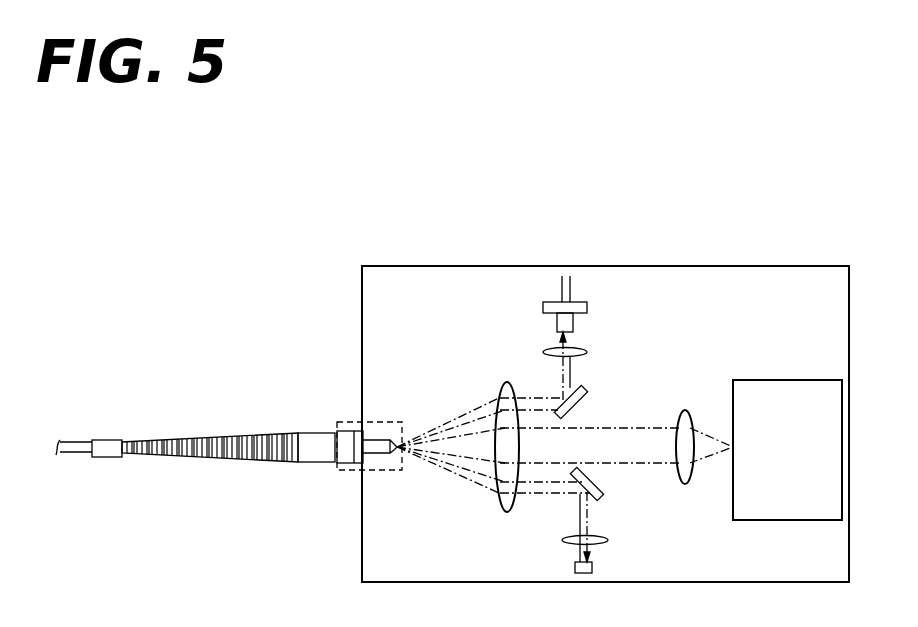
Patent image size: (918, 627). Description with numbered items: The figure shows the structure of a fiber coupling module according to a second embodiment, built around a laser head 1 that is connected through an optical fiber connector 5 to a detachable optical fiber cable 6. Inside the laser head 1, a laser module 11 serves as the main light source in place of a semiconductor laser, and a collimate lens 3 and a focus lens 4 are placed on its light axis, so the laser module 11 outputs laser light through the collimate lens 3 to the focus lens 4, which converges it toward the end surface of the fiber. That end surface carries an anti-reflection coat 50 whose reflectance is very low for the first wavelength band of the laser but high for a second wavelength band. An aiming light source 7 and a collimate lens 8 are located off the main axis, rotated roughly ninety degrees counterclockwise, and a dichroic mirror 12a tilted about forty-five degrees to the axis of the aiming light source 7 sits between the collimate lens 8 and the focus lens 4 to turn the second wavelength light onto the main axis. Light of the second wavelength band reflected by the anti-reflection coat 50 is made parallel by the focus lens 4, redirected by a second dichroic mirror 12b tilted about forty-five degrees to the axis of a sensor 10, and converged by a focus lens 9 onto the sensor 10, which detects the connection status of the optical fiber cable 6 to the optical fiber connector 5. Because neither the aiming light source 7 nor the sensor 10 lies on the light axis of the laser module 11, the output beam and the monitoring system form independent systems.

The laser head 1 is at (403, 266).
The collimate lens 3 is at (684, 410).
The focus lens 4 is at (498, 395).
The optical fiber connector 5 is at (352, 418).
The optical fiber cable 6 is at (247, 432).
The aiming light source 7 is at (588, 307).
The collimate lens 8 is at (548, 348).
The focus lens 9 is at (608, 538).
The sensor 10 is at (573, 567).
The laser module 11 is at (811, 380).
The dichroic mirror 12a is at (588, 391).
The dichroic mirror 12b is at (603, 481).
The anti-reflection coat 50 is at (392, 455).